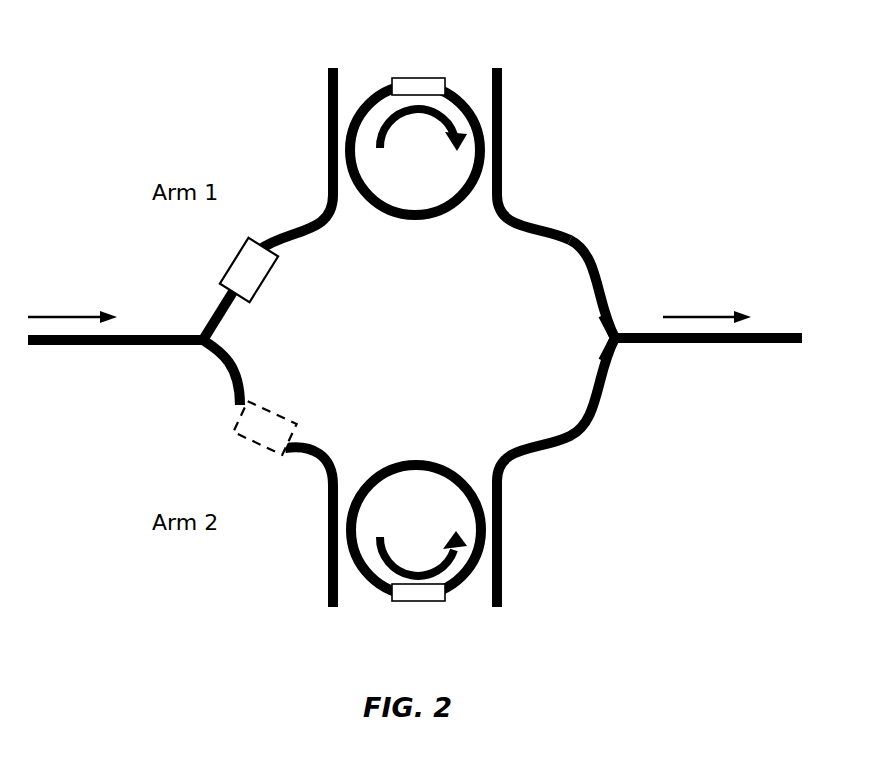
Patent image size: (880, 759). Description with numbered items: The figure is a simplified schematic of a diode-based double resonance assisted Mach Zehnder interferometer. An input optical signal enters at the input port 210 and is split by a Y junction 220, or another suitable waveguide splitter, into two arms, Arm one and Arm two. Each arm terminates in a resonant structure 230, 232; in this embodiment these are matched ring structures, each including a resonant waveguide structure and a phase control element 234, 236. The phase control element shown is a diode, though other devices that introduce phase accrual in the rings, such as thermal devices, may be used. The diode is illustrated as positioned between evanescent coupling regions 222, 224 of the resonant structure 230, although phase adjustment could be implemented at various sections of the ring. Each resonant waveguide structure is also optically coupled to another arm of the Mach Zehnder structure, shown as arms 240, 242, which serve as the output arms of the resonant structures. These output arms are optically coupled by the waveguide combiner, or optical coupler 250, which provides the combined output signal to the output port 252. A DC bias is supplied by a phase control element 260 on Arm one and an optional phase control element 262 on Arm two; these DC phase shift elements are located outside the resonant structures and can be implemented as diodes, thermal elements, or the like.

The input port 210 is at (146, 345).
The Y junction 220 is at (250, 344).
The evanescent coupling region 222 is at (306, 145).
The evanescent coupling region 224 is at (522, 148).
The resonant structure 230 is at (402, 275).
The resonant structure 232 is at (462, 409).
The phase control element 234 is at (433, 78).
The phase control element 236 is at (447, 601).
The arm 240 is at (574, 240).
The arm 242 is at (578, 450).
The optical coupler 250 is at (585, 328).
The output port 252 is at (758, 333).
The phase control element 260 is at (229, 254).
The phase control element 262 is at (257, 446).